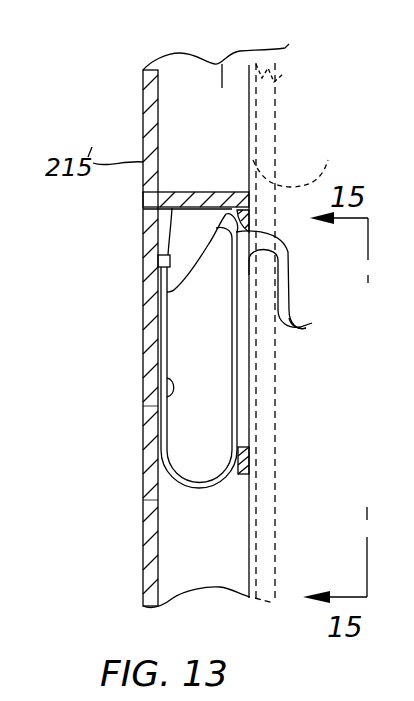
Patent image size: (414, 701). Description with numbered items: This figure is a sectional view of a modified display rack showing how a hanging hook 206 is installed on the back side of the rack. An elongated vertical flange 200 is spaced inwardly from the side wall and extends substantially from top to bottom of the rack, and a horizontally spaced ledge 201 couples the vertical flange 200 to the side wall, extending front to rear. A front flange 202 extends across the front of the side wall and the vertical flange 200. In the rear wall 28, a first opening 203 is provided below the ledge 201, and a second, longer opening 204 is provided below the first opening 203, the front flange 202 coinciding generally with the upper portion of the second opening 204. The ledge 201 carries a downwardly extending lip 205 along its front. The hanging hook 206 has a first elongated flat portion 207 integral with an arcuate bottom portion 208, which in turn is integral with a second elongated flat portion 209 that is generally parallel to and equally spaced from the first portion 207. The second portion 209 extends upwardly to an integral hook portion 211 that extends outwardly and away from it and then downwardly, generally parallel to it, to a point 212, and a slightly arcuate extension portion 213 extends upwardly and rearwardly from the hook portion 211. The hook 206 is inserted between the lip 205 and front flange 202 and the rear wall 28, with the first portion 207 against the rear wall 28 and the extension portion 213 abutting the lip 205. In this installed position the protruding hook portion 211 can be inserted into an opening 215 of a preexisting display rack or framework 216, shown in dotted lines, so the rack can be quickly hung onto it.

The vertical flange 200 is at (243, 52).
The preexisting display rack or framework 216 is at (283, 74).
The ledge 201 is at (172, 191).
The opening 215 is at (321, 173).
The first opening 203 is at (150, 218).
The extension portion 213 is at (152, 290).
The lip 205 is at (252, 212).
The hook portion 211 is at (289, 266).
The point 212 is at (312, 323).
The hanging hook 206 is at (292, 377).
The first elongated flat portion 207 is at (148, 402).
The rear wall 28 is at (146, 406).
The second elongated flat portion 209 is at (243, 410).
The second opening 204 is at (150, 502).
The front flange 202 is at (250, 456).
The arcuate bottom portion 208 is at (198, 488).